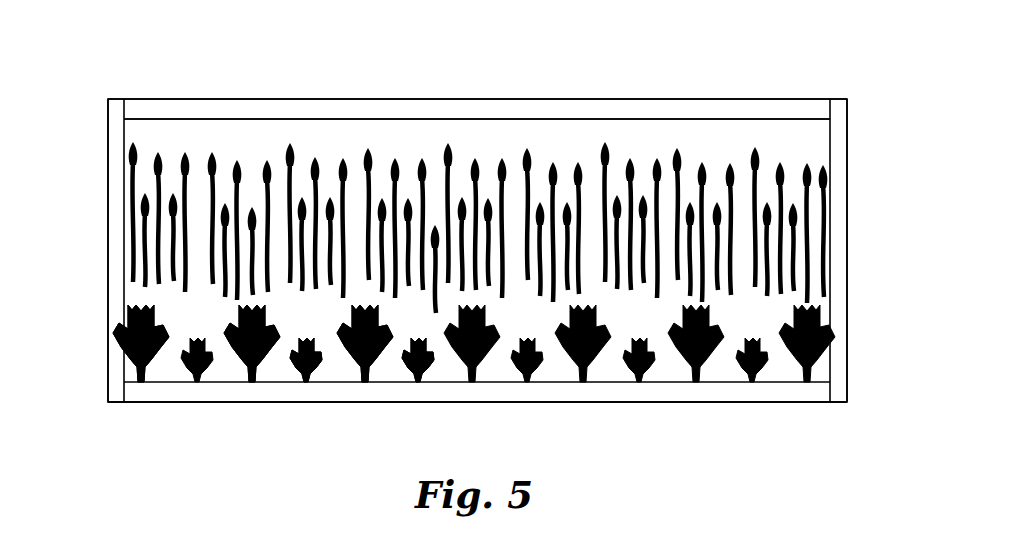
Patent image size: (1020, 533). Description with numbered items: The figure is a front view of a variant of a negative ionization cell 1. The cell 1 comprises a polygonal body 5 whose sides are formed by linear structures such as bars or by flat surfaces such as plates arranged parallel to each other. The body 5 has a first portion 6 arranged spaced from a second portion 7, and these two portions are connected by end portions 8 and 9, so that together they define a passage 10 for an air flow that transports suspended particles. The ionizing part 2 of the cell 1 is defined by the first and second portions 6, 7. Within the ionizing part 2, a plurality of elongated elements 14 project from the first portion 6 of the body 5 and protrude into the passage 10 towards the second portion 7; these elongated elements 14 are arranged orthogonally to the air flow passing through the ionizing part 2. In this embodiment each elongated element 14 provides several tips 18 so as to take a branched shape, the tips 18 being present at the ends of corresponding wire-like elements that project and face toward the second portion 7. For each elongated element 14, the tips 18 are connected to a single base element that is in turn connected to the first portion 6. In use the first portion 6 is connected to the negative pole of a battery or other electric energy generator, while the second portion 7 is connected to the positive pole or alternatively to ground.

The ionization cell 1 is at (132, 81).
The ionizing part 2 is at (857, 87).
The polygonal body 5 is at (831, 420).
The first portion 6 is at (668, 403).
The second portion 7 is at (673, 97).
The end portion 8 is at (108, 362).
The end portion 9 is at (847, 323).
The passage 10 is at (773, 133).
The elongated elements 14 is at (240, 374).
The tips 18 is at (433, 343).